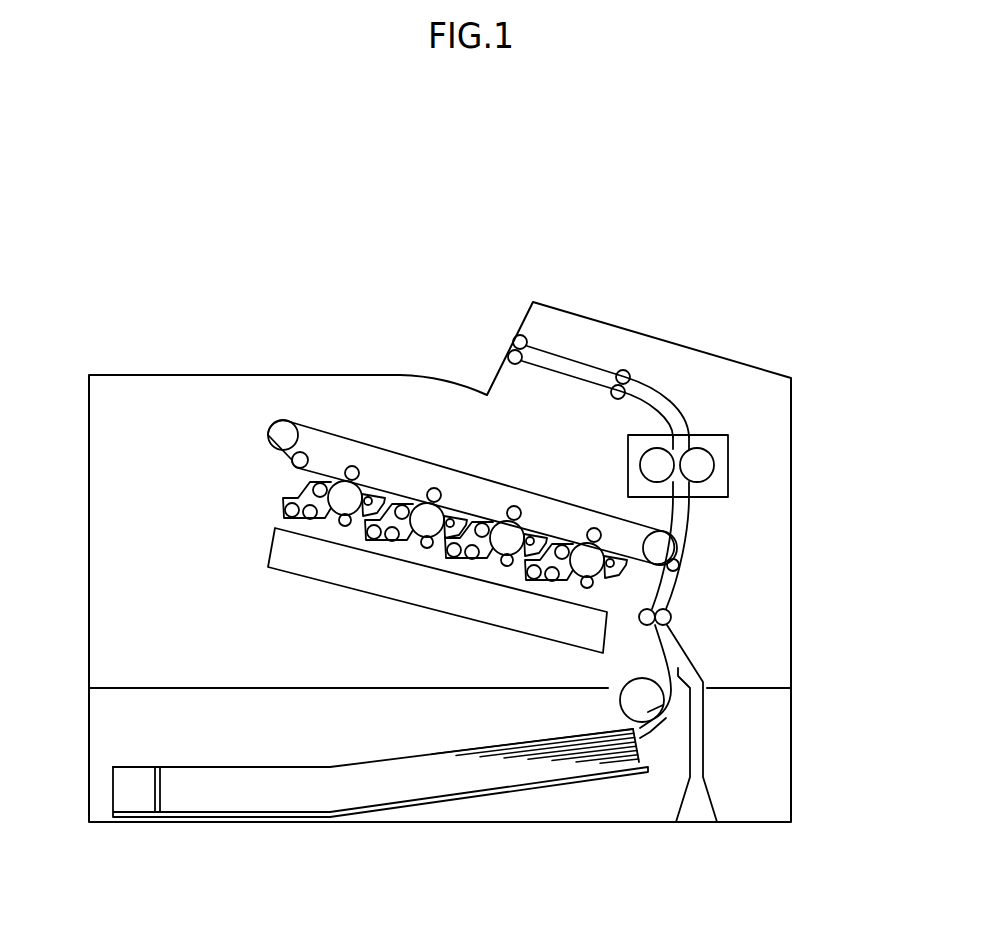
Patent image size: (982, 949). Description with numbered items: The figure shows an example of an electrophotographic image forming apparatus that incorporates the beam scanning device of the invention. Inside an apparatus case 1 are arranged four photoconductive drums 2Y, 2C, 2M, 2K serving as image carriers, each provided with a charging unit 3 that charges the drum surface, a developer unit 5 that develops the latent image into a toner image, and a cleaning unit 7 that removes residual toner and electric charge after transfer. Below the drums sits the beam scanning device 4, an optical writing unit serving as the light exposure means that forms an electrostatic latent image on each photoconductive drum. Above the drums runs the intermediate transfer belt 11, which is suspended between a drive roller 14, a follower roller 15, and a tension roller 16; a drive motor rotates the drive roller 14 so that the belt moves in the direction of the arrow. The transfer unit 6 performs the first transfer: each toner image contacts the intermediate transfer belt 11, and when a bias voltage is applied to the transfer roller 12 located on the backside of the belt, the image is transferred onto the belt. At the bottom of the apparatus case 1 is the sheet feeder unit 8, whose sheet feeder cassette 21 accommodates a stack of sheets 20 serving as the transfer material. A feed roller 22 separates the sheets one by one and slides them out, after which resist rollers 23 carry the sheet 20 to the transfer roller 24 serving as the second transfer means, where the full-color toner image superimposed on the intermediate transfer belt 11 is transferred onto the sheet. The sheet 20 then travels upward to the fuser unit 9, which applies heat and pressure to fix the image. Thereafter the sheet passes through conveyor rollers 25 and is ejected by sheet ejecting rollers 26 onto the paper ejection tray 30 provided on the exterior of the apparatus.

The apparatus case 1 is at (142, 360).
The paper ejection tray 30 is at (376, 373).
The intermediate transfer belt 11 is at (303, 420).
The follower roller 15 is at (272, 418).
The tension roller 16 is at (294, 458).
The photoconductive drum 2Y is at (345, 492).
The transfer roller 12 is at (354, 477).
The photoconductive drum 2C is at (427, 516).
The photoconductive drum 2M is at (507, 535).
The photoconductive drum 2K is at (587, 556).
The charging unit 3 is at (583, 594).
The developer unit 5 is at (525, 586).
The cleaning unit 7 is at (628, 573).
The beam scanning device 4 is at (311, 581).
The transfer unit 6 is at (612, 536).
The drive roller 14 is at (666, 548).
The transfer roller 24 is at (678, 566).
The sheet ejecting rollers 26 is at (530, 340).
The conveyor rollers 25 is at (625, 372).
The fuser unit 9 is at (718, 432).
The resist rollers 23 is at (668, 621).
The sheet feeder unit 8 is at (797, 763).
The feed roller 22 is at (633, 703).
The sheets 20 is at (466, 773).
The sheet feeder cassette 21 is at (609, 784).